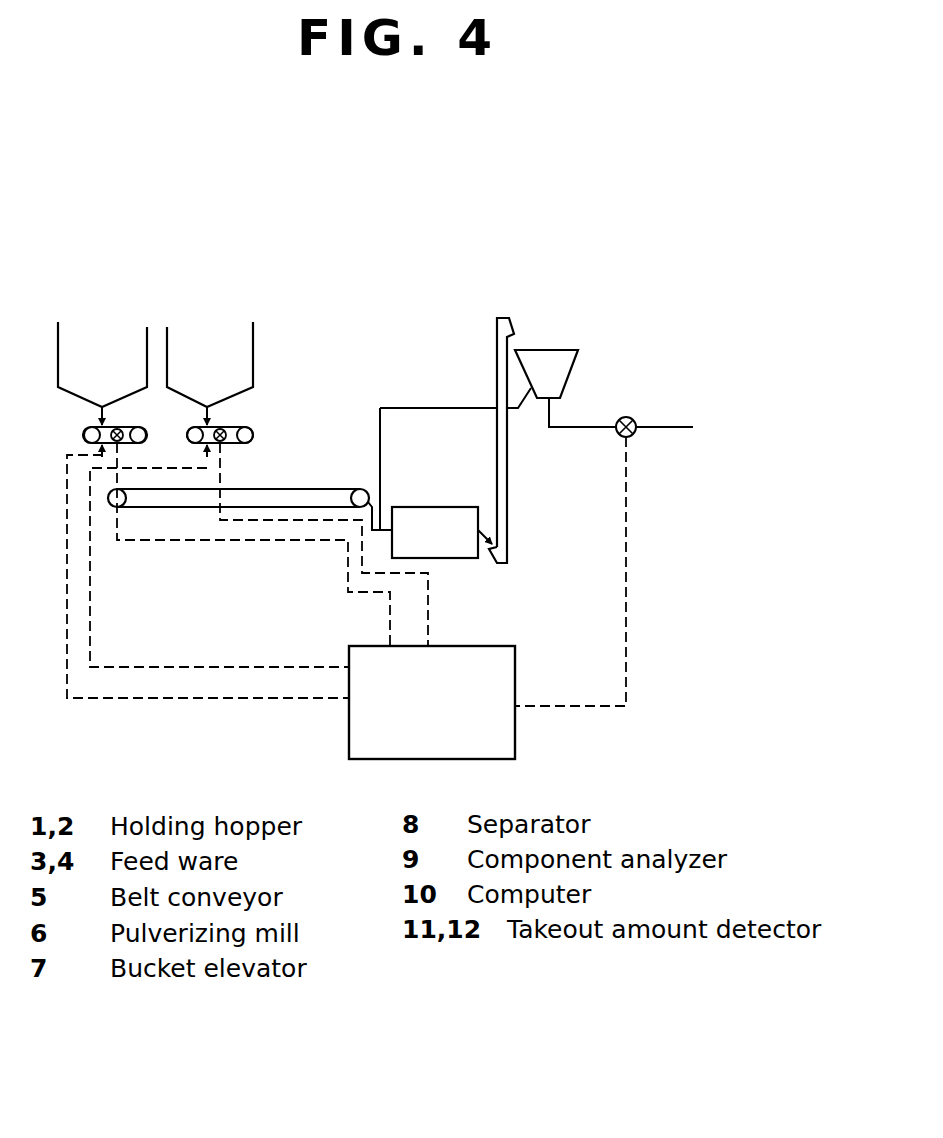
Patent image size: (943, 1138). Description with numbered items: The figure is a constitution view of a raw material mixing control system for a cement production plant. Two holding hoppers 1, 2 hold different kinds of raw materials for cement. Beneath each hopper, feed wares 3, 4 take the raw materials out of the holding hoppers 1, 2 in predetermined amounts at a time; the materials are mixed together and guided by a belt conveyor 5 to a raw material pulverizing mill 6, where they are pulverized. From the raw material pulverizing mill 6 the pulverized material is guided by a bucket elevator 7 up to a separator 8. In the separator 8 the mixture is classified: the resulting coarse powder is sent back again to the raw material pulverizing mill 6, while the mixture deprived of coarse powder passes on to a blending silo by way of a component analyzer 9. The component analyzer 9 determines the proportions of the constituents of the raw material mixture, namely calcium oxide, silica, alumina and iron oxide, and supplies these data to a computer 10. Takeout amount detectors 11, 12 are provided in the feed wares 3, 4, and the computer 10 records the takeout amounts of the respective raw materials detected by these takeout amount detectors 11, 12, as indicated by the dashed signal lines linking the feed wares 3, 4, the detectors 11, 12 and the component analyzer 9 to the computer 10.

The holding hopper 1 is at (60, 322).
The holding hopper 2 is at (169, 327).
The feed ware 3 is at (146, 440).
The feed ware 4 is at (253, 435).
The belt conveyor 5 is at (330, 489).
The raw material pulverizing mill 6 is at (443, 507).
The bucket elevator 7 is at (507, 478).
The separator 8 is at (548, 350).
The component analyzer 9 is at (626, 417).
The computer 10 is at (497, 646).
The takeout amount detector 11 is at (121, 430).
The takeout amount detector 12 is at (225, 430).